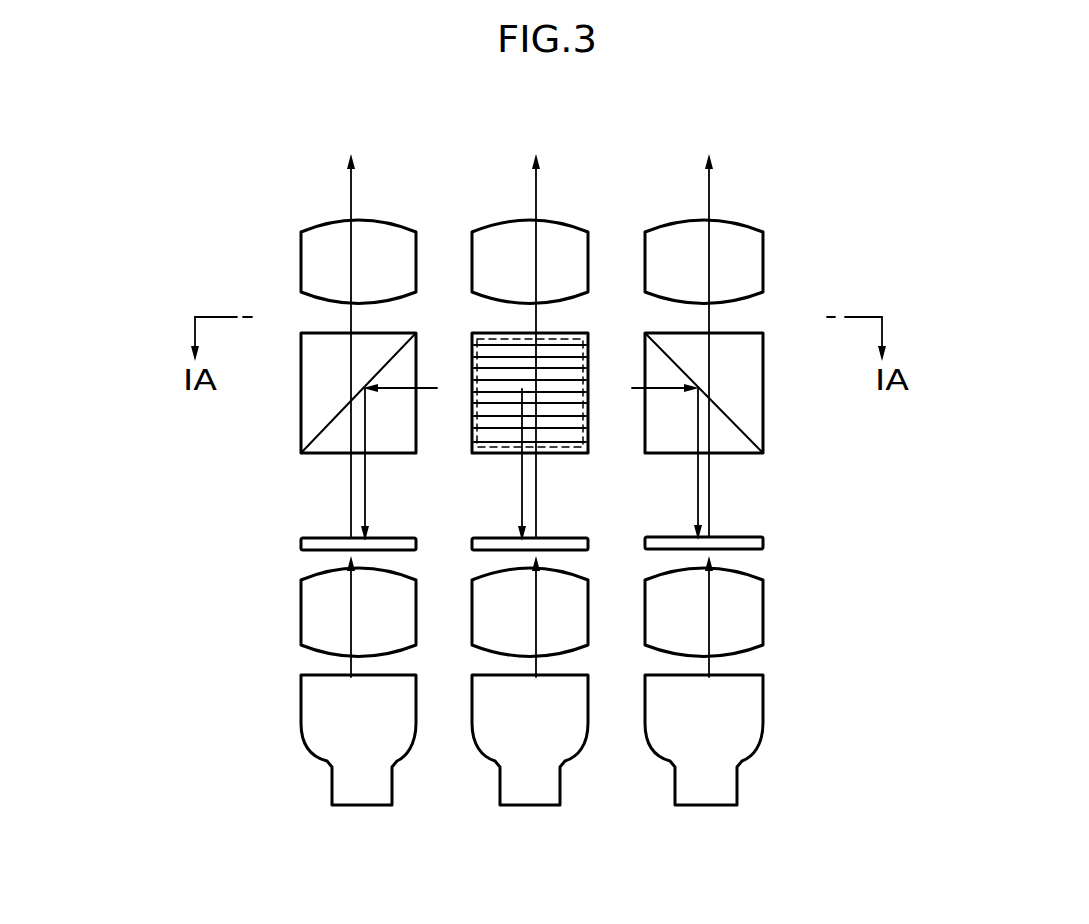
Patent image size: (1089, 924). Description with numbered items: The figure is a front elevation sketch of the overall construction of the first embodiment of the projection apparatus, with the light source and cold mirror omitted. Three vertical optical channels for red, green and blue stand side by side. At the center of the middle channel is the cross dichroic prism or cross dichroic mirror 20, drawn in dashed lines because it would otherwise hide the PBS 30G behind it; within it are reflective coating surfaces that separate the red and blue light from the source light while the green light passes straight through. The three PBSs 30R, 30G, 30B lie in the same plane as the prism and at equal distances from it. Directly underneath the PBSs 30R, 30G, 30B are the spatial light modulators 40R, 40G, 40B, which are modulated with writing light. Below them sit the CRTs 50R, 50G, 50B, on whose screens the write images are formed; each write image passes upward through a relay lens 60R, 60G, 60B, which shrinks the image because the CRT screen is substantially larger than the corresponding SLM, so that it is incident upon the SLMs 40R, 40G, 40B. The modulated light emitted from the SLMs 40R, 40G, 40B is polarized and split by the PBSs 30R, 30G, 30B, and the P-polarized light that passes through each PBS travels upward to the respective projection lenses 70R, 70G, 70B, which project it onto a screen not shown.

The cross dichroic prism or cross dichroic mirror 20 is at (566, 336).
The PBS 30B is at (310, 397).
The PBS 30G is at (570, 422).
The PBS 30R is at (753, 367).
The spatial light modulator 40B is at (310, 548).
The spatial light modulator 40G is at (474, 534).
The spatial light modulator 40R is at (758, 541).
The CRT 50B is at (325, 753).
The CRT 50G is at (497, 753).
The CRT 50R is at (743, 747).
The relay lens 60B is at (312, 625).
The relay lens 60G is at (575, 628).
The relay lens 60R is at (753, 618).
The projection lens 70B is at (308, 253).
The projection lens 70G is at (485, 226).
The projection lens 70R is at (752, 240).